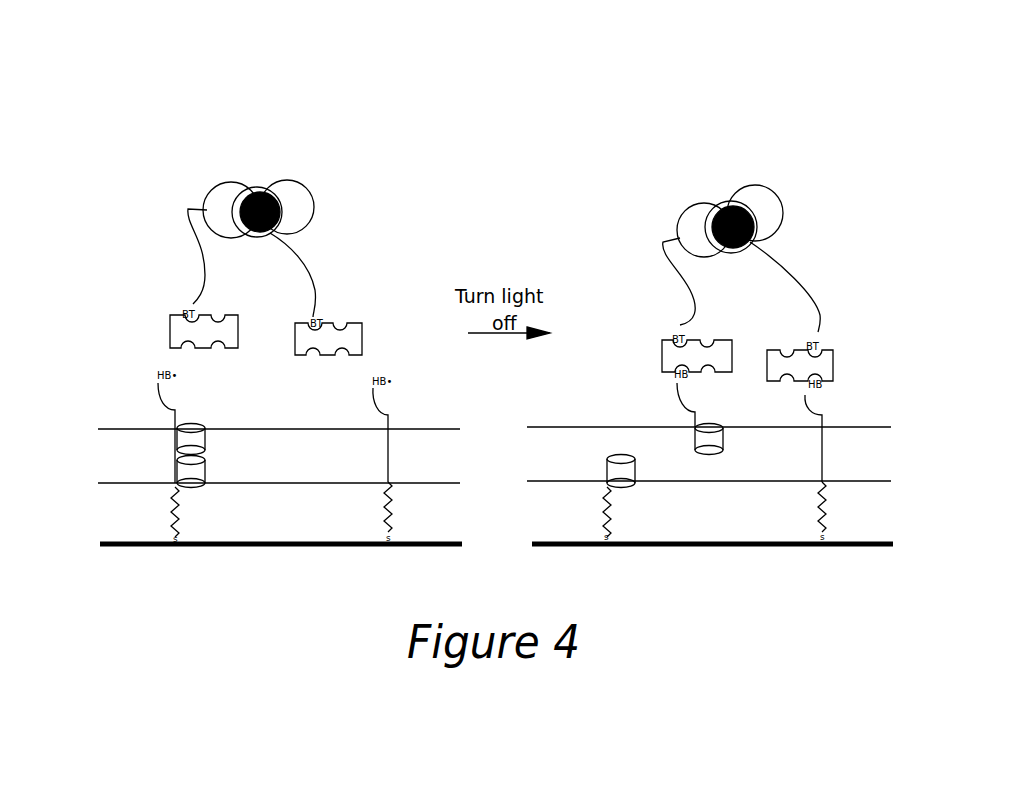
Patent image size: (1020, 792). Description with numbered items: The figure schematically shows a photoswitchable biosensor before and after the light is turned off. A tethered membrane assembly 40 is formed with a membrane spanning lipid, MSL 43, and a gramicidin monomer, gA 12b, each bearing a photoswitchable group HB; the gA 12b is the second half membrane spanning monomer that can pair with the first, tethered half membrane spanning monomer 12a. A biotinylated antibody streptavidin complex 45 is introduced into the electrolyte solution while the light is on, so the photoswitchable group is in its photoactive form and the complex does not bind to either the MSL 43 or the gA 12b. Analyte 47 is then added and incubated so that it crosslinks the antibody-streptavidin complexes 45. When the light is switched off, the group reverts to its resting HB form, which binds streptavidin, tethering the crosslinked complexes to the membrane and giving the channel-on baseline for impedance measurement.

The analyte 47 is at (260, 188).
The biotinylated antibody streptavidin complex 45 is at (315, 205).
The tethered membrane assembly 40 is at (98, 462).
The gA 12b is at (197, 442).
The half membrane spanning monomer 12a is at (200, 472).
The MSL 43 is at (390, 457).